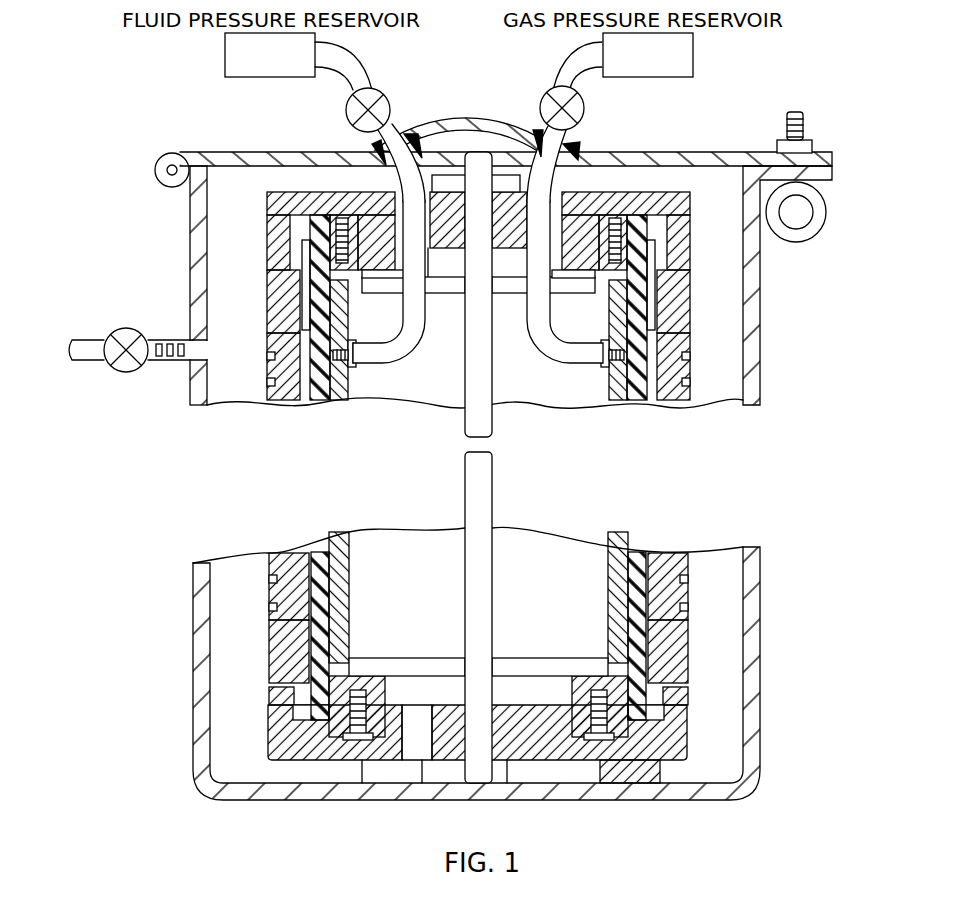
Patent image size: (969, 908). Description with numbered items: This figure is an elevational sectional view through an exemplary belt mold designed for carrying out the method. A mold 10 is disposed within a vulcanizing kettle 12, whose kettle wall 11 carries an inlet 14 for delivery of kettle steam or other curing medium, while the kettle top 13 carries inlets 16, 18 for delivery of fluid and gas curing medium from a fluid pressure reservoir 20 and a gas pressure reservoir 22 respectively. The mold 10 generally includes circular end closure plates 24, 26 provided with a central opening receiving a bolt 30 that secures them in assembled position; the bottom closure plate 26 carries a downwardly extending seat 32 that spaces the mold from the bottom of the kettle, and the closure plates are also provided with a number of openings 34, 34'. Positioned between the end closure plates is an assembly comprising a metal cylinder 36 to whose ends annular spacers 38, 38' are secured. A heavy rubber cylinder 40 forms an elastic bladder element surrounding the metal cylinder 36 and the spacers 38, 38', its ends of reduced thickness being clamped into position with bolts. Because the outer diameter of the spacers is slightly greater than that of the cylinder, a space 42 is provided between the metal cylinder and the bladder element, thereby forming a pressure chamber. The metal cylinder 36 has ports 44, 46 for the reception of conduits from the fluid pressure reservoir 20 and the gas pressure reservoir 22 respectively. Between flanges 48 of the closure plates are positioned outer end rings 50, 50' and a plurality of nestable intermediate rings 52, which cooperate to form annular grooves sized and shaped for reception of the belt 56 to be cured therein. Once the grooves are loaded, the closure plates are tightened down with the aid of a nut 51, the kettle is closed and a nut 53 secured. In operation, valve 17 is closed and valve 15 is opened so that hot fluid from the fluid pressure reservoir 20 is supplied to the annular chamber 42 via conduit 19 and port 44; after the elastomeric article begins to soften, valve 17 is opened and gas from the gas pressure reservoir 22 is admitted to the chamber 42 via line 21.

The mold 10 is at (703, 318).
The kettle wall 11 is at (762, 286).
The vulcanizing kettle 12 is at (150, 245).
The kettle top 13 is at (433, 118).
The inlet 14 is at (97, 340).
The valve 15 is at (381, 93).
The inlet 16 is at (377, 143).
The valve 17 is at (548, 91).
The inlet 18 is at (566, 143).
The conduit 19 is at (426, 337).
The fluid pressure reservoir 20 is at (285, 69).
The line 21 is at (534, 345).
The gas pressure reservoir 22 is at (663, 69).
The end closure plate 24 is at (693, 200).
The bottom closure plate 26 is at (280, 743).
The bolt 30 is at (463, 474).
The seat 32 is at (605, 770).
The opening 34 is at (329, 439).
The opening 34' is at (655, 141).
The metal cylinder 36 is at (460, 402).
The annular spacer 38 is at (472, 299).
The annular spacer 38' is at (478, 644).
The rubber cylinder 40 is at (318, 388).
The space 42 is at (626, 548).
The port 44 is at (360, 345).
The port 46 is at (602, 372).
The flange 48 is at (690, 263).
The outer end ring 50 is at (695, 651).
The outer end ring 50' is at (255, 301).
The nut 51 is at (440, 182).
The nestable intermediate ring 52 is at (238, 598).
The nut 53 is at (810, 148).
The belt 56 is at (293, 640).